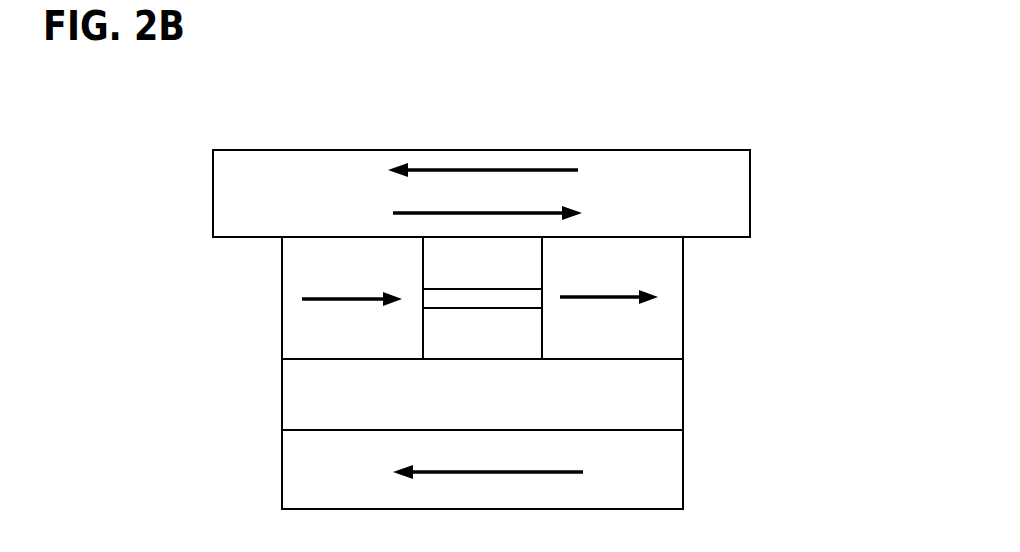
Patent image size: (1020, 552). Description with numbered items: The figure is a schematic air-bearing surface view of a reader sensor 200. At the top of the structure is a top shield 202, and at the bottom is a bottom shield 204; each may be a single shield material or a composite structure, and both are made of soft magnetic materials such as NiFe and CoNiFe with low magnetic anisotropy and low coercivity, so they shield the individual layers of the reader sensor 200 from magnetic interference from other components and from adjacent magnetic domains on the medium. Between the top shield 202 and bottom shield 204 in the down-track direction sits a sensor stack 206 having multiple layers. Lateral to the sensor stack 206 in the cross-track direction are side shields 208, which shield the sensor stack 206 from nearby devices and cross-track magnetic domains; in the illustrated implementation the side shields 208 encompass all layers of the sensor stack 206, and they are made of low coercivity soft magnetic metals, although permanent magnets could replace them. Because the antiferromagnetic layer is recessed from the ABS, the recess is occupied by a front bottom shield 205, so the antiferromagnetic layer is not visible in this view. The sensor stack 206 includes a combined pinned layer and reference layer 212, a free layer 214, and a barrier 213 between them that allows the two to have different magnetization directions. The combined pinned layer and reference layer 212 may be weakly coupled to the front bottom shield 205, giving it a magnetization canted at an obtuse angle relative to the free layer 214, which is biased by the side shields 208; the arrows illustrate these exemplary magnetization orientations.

The reader sensor 200 is at (741, 113).
The top shield 202 is at (213, 202).
The bottom shield 204 is at (282, 475).
The front bottom shield 205 is at (282, 400).
The sensor stack 206 is at (546, 274).
The side shields 208 is at (282, 296).
The combined pinned layer and reference layer 212 is at (497, 344).
The barrier 213 is at (447, 287).
The free layer 214 is at (497, 270).